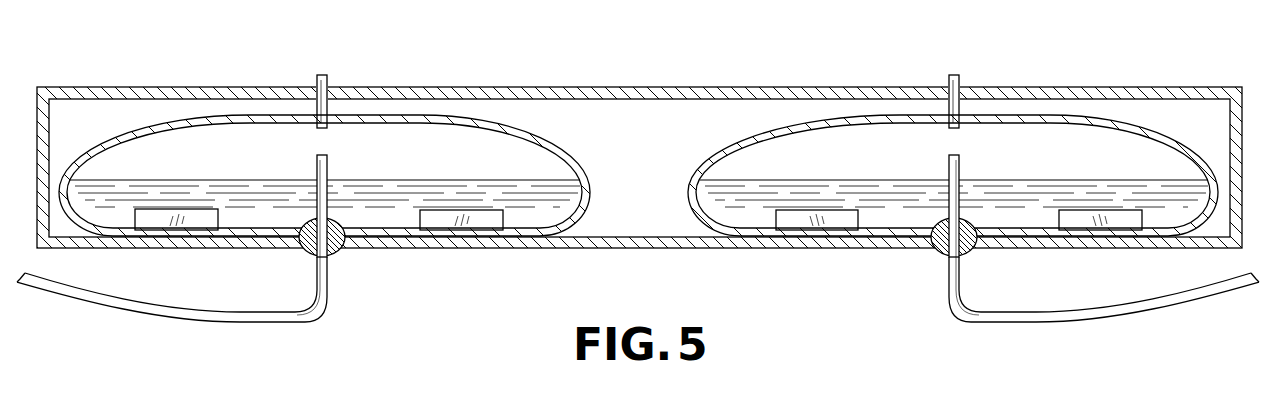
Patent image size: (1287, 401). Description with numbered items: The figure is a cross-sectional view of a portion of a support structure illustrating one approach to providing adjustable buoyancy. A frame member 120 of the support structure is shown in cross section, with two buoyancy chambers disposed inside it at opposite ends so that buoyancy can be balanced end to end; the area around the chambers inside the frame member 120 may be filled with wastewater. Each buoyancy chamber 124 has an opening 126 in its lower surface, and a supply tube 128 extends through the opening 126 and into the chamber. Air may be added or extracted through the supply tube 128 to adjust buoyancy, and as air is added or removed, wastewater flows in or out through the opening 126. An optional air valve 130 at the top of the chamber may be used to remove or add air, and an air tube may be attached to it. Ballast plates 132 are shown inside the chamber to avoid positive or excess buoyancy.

The frame member 120 is at (611, 87).
The buoyancy chamber 124 is at (782, 125).
The opening 126 is at (945, 218).
The supply tube 128 is at (203, 318).
The air valve 130 is at (328, 80).
The ballast plates 132 is at (202, 217).